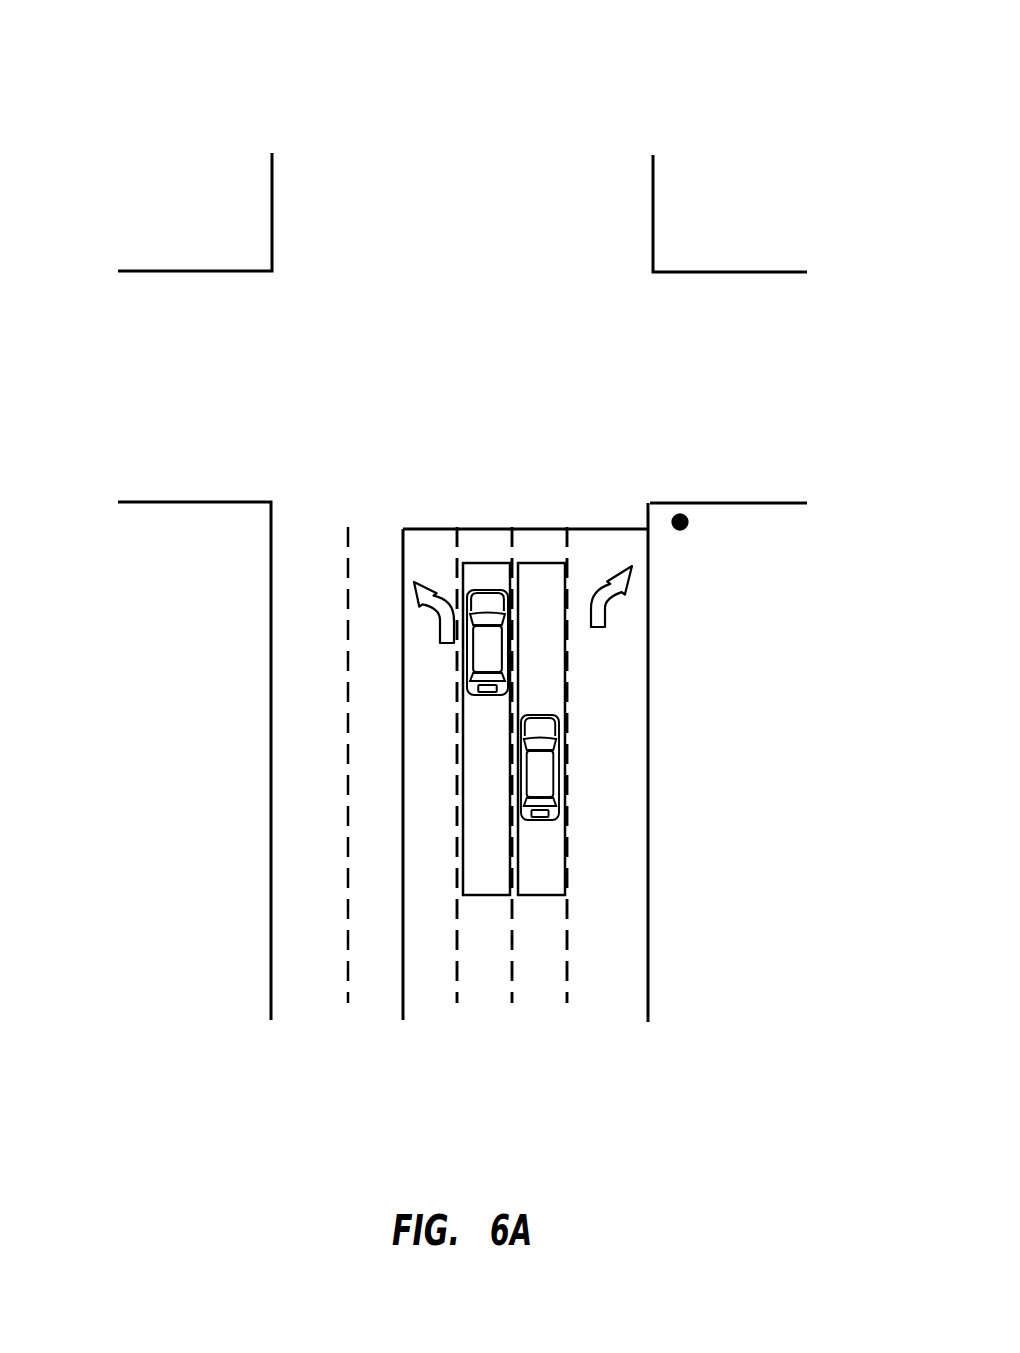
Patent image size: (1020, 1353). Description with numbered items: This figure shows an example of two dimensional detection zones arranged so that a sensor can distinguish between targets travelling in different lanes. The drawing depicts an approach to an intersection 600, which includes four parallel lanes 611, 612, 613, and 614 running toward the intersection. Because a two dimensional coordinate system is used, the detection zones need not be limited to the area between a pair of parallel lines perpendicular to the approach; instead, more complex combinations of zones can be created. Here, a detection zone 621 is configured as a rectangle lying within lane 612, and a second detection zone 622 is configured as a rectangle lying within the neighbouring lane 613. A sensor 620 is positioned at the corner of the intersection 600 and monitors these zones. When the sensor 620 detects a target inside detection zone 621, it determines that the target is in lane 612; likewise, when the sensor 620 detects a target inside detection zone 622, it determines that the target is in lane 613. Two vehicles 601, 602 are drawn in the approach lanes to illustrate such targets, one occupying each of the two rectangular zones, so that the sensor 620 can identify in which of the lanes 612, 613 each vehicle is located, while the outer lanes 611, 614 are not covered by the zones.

The intersection 600 is at (694, 92).
The vehicle 601 is at (488, 598).
The vehicle 602 is at (540, 772).
The lane 611 is at (428, 983).
The lane 612 is at (483, 983).
The lane 613 is at (542, 983).
The lane 614 is at (597, 983).
The sensor 620 is at (688, 524).
The detection zone 621 is at (480, 898).
The detection zone 622 is at (540, 898).